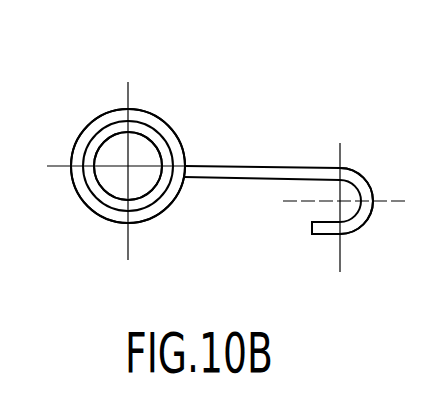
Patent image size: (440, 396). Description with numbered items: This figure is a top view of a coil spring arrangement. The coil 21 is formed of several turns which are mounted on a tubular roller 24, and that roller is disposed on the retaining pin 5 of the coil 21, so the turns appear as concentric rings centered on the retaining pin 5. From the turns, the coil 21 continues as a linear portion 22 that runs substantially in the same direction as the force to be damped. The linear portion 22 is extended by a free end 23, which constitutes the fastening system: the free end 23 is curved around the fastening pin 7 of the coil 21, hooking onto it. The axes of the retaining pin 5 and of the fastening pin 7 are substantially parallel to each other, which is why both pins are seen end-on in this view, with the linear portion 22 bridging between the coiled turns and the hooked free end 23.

The retaining pin 5 is at (126, 164).
The coil 21 is at (95, 203).
The tubular roller 24 is at (148, 198).
The linear portion 22 is at (243, 173).
The fastening pin 7 is at (338, 202).
The free end 23 is at (360, 225).